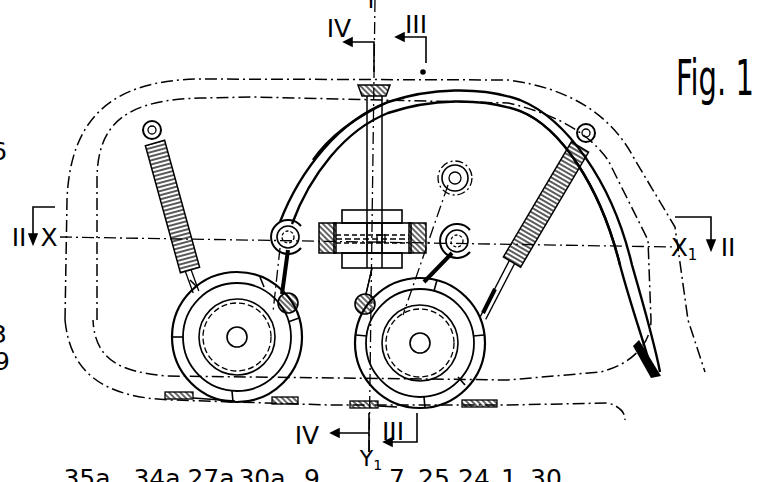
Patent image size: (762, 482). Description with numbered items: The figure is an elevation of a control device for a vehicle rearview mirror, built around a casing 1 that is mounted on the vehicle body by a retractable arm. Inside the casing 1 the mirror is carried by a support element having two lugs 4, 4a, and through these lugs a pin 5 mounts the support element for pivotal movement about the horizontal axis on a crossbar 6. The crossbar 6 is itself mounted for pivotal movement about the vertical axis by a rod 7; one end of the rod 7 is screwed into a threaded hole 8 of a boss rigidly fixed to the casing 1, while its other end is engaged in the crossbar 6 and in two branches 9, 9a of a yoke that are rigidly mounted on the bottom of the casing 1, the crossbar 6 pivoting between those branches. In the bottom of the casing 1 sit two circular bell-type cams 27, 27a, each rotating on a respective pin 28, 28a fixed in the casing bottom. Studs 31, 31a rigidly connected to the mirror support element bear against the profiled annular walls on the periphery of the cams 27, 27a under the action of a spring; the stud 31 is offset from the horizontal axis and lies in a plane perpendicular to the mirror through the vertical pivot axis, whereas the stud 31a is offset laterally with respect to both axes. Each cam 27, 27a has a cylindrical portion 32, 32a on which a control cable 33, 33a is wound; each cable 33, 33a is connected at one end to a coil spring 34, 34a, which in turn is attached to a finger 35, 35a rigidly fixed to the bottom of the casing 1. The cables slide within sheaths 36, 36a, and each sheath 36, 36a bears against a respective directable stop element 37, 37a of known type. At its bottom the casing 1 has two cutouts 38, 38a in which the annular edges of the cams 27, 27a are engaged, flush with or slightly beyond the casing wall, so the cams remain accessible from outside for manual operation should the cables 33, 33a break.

The casing 1 is at (83, 327).
The lug 4 is at (410, 222).
The lug 4a is at (317, 222).
The pin 5 is at (338, 218).
The crossbar 6 is at (382, 228).
The rod 7 is at (363, 122).
The threaded hole 8 is at (363, 93).
The yoke branch 9 is at (359, 213).
The yoke branch 9a is at (356, 304).
The bell-type cam 27 is at (487, 339).
The bell-type cam 27a is at (172, 337).
The pin 28 is at (425, 347).
The pin 28a is at (233, 333).
The stud 31 is at (360, 312).
The stud 31a is at (295, 300).
The cylindrical portion 32 is at (457, 347).
The cylindrical portion 32a is at (213, 363).
The control cable 33 is at (508, 293).
The control cable 33a is at (280, 267).
The coil spring 34 is at (628, 164).
The coil spring 34a is at (167, 232).
The finger 35 is at (586, 124).
The finger 35a is at (150, 122).
The sheath 36 is at (508, 195).
The sheath 36a is at (330, 140).
The directable stop element 37 is at (283, 230).
The directable stop element 37a is at (474, 243).
The cutout 38 is at (397, 408).
The cutout 38a is at (200, 400).